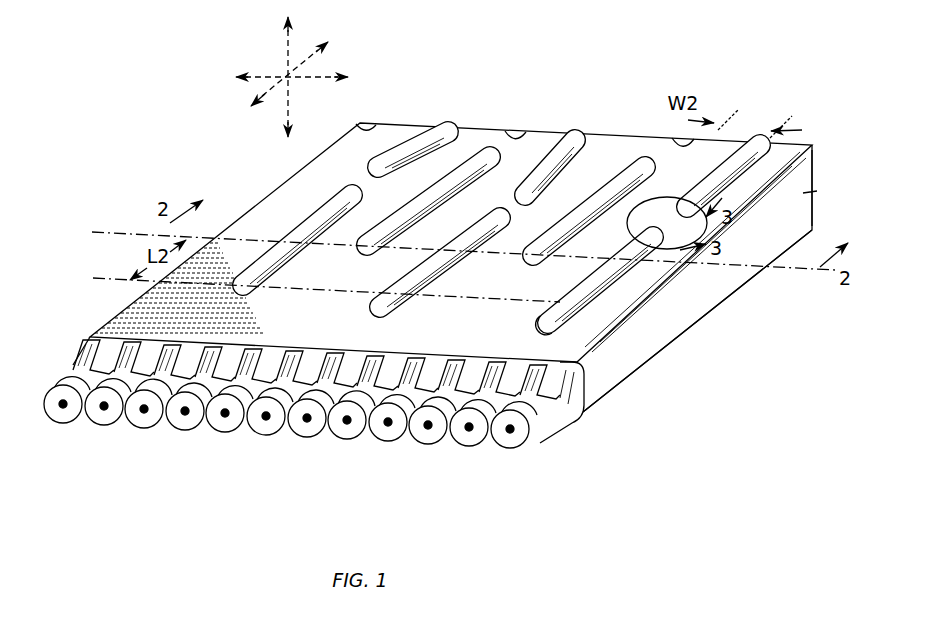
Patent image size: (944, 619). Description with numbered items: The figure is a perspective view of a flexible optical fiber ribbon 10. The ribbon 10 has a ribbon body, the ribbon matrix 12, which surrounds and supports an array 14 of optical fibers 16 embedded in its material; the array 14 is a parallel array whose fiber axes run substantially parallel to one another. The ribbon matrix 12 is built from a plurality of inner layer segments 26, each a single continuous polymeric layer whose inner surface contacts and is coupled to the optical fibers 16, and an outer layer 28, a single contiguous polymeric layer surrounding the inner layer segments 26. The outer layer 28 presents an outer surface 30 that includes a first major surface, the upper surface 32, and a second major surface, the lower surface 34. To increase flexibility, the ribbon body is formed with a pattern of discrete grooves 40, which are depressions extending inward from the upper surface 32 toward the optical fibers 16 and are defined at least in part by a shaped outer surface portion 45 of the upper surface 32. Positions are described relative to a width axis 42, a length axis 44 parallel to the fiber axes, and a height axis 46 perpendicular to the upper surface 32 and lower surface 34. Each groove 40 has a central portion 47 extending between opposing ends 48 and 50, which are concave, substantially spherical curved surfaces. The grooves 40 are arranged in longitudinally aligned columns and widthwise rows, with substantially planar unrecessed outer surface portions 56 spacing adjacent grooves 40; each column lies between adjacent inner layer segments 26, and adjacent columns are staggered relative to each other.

The optical fiber ribbon 10 is at (790, 75).
The ribbon matrix 12 is at (718, 318).
The array 14 is at (532, 455).
The optical fibers 16 is at (104, 422).
The inner layer segments 26 is at (102, 378).
The outer layer 28 is at (648, 342).
The outer surface 30 is at (798, 165).
The upper surface 32 is at (380, 135).
The lower surface 34 is at (613, 390).
The grooves 40 is at (473, 150).
The width axis 42 is at (305, 80).
The length axis 44 is at (302, 60).
The shaped outer surface portion 45 is at (562, 292).
The height axis 46 is at (290, 100).
The central portion 47 is at (592, 282).
The opposing end 48 is at (547, 322).
The opposing end 50 is at (655, 233).
The unrecessed outer surface portions 56 is at (667, 177).